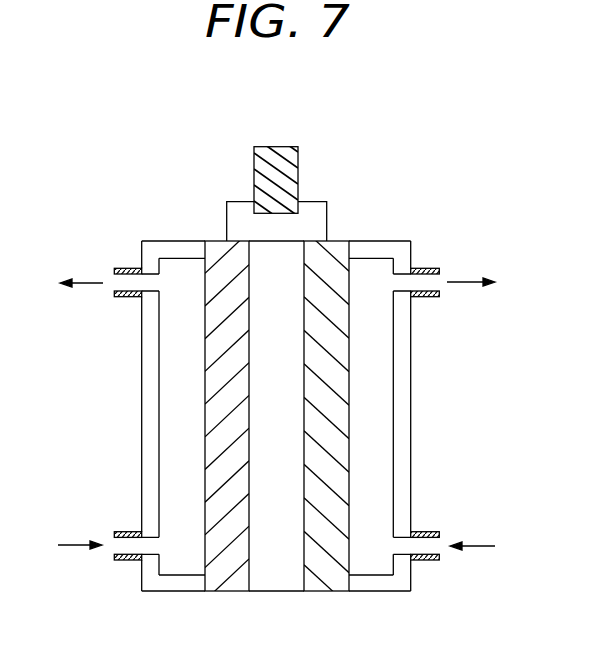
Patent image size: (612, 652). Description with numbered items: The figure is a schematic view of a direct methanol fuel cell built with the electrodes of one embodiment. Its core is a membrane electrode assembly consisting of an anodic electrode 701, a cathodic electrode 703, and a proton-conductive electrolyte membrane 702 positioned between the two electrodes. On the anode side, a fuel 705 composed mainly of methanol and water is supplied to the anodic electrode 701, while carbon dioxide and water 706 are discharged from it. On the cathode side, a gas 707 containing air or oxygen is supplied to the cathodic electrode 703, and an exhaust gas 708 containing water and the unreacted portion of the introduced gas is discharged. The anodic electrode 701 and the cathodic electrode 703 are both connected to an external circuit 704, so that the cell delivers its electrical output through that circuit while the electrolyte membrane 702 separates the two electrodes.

The anodic electrode 701 is at (215, 248).
The proton-conductive electrolyte membrane 702 is at (285, 255).
The cathodic electrode 703 is at (338, 248).
The external circuit 704 is at (272, 147).
The fuel 705 is at (73, 545).
The carbon dioxide and water 706 is at (83, 283).
The gas 707 is at (483, 546).
The exhaust gas 708 is at (470, 282).